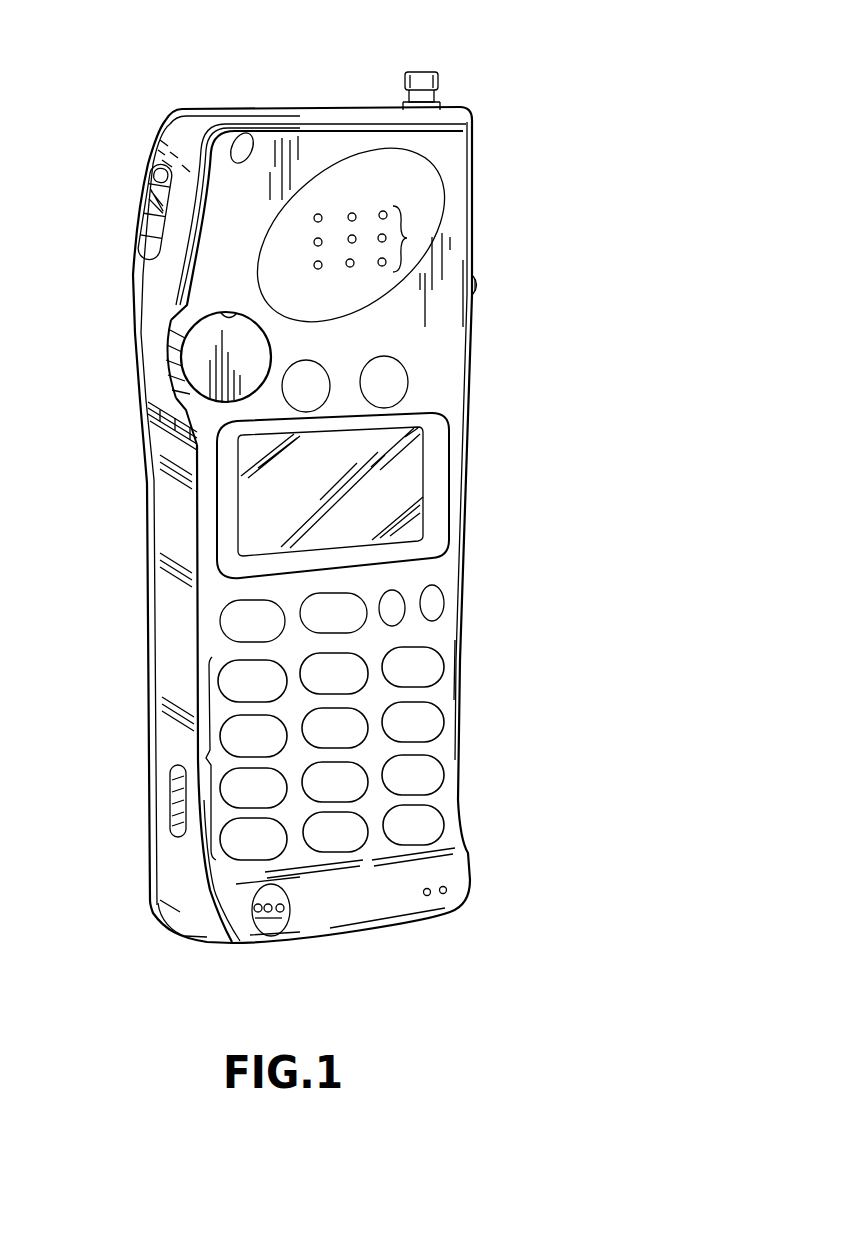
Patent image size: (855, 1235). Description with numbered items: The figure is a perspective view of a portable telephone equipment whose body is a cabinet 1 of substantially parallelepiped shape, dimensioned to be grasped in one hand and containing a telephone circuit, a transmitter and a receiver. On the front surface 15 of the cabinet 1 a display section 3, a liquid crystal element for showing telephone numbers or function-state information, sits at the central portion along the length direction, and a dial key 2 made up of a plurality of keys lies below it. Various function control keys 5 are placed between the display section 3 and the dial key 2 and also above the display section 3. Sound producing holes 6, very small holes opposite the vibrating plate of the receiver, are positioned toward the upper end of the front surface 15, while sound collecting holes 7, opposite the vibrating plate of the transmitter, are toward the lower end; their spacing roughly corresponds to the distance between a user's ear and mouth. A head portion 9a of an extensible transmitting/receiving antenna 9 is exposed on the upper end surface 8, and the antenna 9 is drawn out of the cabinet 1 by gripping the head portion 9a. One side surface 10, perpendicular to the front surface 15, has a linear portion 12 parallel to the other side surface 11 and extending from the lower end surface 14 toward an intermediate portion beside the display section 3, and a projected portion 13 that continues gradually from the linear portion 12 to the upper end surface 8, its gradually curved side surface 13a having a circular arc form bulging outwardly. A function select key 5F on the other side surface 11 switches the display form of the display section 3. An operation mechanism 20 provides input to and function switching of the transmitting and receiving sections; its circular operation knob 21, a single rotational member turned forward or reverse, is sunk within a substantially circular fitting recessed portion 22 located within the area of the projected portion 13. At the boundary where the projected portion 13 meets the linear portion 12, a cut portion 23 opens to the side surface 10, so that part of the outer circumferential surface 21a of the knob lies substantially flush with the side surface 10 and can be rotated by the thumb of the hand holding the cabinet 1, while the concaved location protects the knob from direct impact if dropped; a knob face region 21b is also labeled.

The cabinet 1 is at (282, 125).
The dial key 2 is at (205, 760).
The display section 3 is at (450, 483).
The function control keys 5 is at (330, 373).
The function select key 5F is at (478, 285).
The sound producing holes 6 is at (407, 238).
The sound collecting holes 7 is at (268, 925).
The upper end surface 8 is at (322, 112).
The transmitting/receiving antenna 9 is at (440, 85).
The head portion 9a is at (420, 67).
The side surface 10 is at (163, 658).
The other side surface 11 is at (462, 743).
The linear portion 12 is at (173, 848).
The projected portion 13 is at (183, 293).
The side surface of projected portion 13a is at (148, 272).
The lower end surface 14 is at (340, 937).
The front surface 15 is at (462, 328).
The operation mechanism 20 is at (128, 437).
The operation knob 21 is at (187, 367).
The outer circumferential surface 21a is at (148, 400).
The dial knob surface 21b is at (263, 348).
The fitting recessed portion 22 is at (227, 313).
The cut portion 23 is at (173, 338).